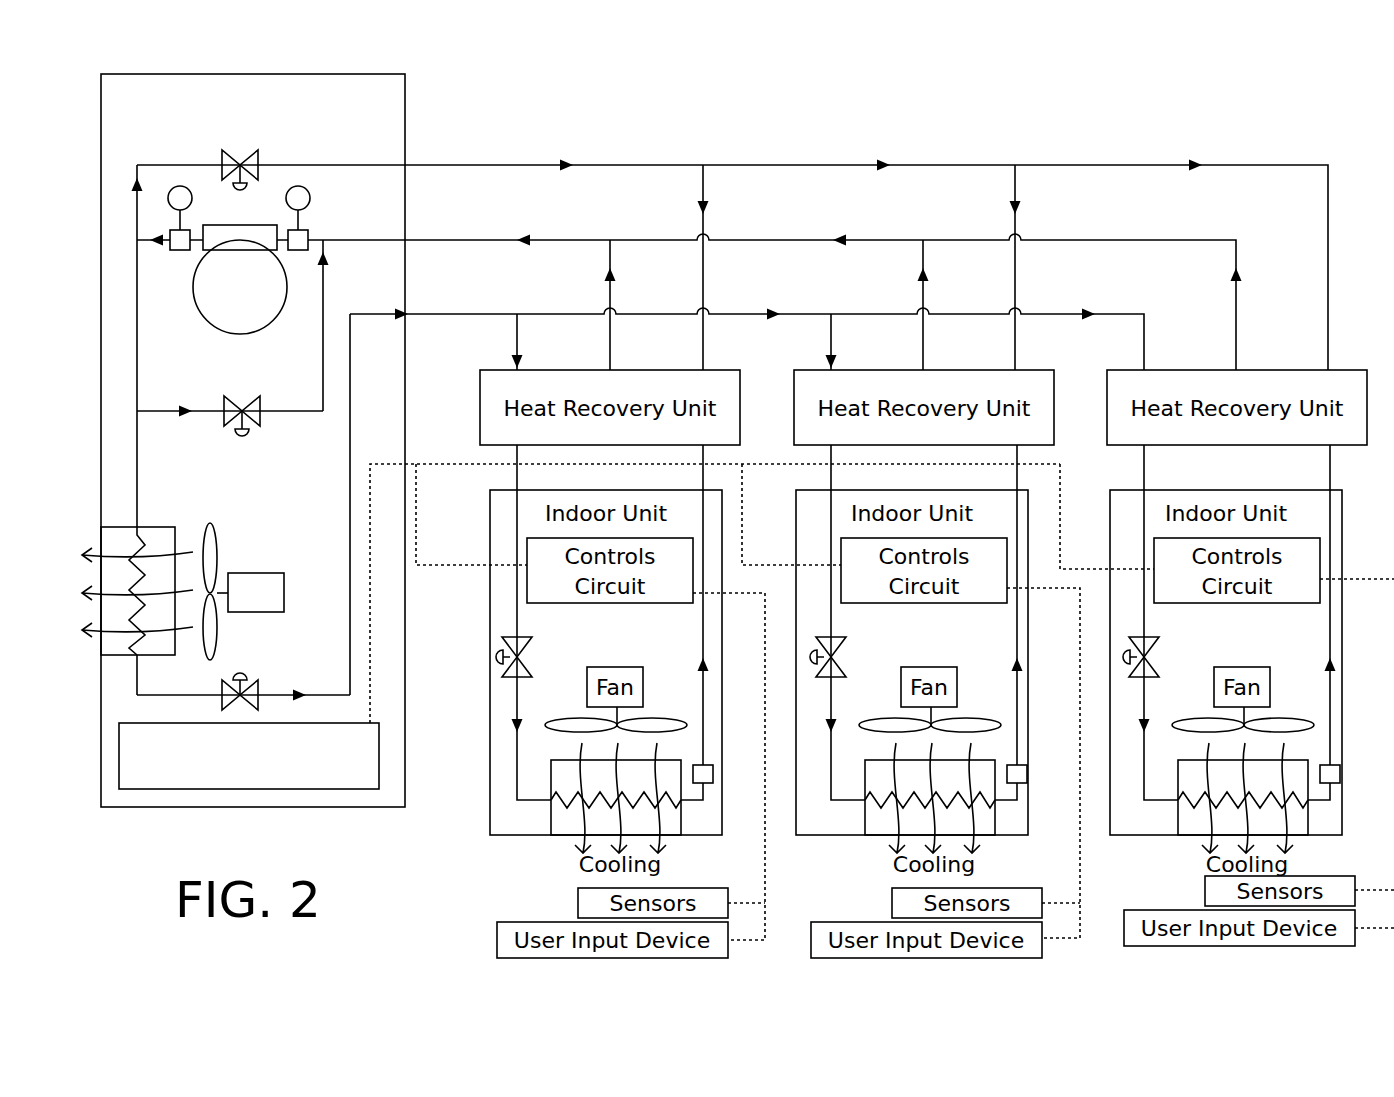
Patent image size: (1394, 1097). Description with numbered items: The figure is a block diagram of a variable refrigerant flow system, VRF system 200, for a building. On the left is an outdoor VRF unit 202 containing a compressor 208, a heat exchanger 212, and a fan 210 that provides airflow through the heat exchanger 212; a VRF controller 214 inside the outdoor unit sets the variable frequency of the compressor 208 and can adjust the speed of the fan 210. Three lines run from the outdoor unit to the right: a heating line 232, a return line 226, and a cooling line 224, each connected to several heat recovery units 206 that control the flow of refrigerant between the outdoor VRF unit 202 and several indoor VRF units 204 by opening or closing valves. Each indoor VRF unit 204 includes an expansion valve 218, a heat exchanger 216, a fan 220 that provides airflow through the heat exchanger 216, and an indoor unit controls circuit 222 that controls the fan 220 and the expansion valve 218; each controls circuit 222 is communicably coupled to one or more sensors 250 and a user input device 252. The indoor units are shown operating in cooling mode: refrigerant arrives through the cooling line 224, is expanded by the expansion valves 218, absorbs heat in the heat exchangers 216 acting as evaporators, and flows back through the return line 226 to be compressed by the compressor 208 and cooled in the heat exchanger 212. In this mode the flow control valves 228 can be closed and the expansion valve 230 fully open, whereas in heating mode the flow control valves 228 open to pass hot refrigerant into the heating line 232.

The VRF system 200 is at (733, 500).
The outdoor VRF unit 202 is at (275, 425).
The indoor VRF unit 204 is at (493, 490).
The heat recovery unit 206 is at (722, 370).
The compressor 208 is at (209, 226).
The fan 210 is at (265, 573).
The heat exchanger 212 is at (160, 527).
The VRF controller 214 is at (363, 762).
The heat exchanger 216 is at (681, 835).
The expansion valve 218 is at (522, 646).
The fan 220 is at (612, 667).
The indoor unit controls circuit 222 is at (620, 603).
The cooling line 224 is at (730, 314).
The return line 226 is at (568, 240).
The flow control valve 228 is at (240, 150).
The expansion valve 230 is at (243, 672).
The heating line 232 is at (618, 165).
The sensors 250 is at (578, 903).
The user input device 252 is at (497, 942).